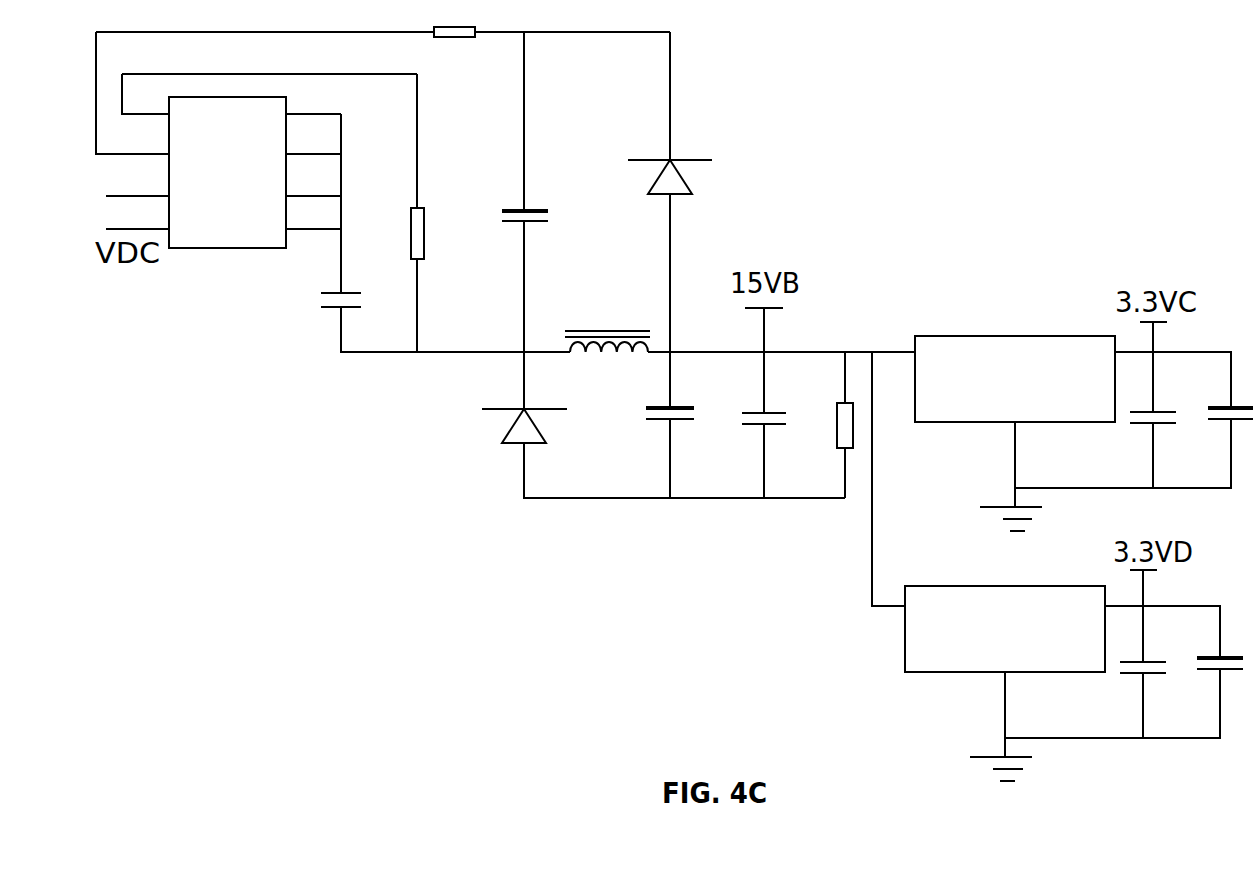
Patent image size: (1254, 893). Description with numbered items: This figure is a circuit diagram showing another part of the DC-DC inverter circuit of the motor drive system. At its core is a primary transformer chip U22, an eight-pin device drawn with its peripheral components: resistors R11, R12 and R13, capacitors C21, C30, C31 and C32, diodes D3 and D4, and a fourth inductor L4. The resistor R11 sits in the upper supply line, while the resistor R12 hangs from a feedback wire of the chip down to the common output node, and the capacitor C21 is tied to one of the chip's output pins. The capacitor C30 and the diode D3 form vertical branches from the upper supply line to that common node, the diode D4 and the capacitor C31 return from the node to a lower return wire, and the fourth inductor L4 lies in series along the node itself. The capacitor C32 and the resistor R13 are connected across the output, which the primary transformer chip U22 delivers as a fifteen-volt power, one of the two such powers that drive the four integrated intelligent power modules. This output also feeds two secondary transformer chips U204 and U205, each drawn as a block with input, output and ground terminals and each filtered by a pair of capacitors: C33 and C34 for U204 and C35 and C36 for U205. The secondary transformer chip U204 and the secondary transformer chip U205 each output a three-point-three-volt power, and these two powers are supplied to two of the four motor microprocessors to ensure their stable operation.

The primary transformer chip U22 is at (227, 189).
The peripheral resistor R11 is at (456, 52).
The peripheral resistor R12 is at (388, 233).
The capacitor C21 is at (324, 318).
The capacitor C30 is at (508, 236).
The diode D3 is at (655, 180).
The diode D4 is at (509, 427).
The fourth inductor L4 is at (607, 323).
The capacitor C31 is at (654, 432).
The capacitor C32 is at (749, 437).
The peripheral resistor R13 is at (821, 443).
The secondary transformer chip U204 is at (1015, 361).
The capacitor C33 is at (1137, 435).
The capacitor C34 is at (1212, 432).
The secondary transformer chip U205 is at (1005, 611).
The capacitor C35 is at (1126, 685).
The capacitor C36 is at (1202, 681).